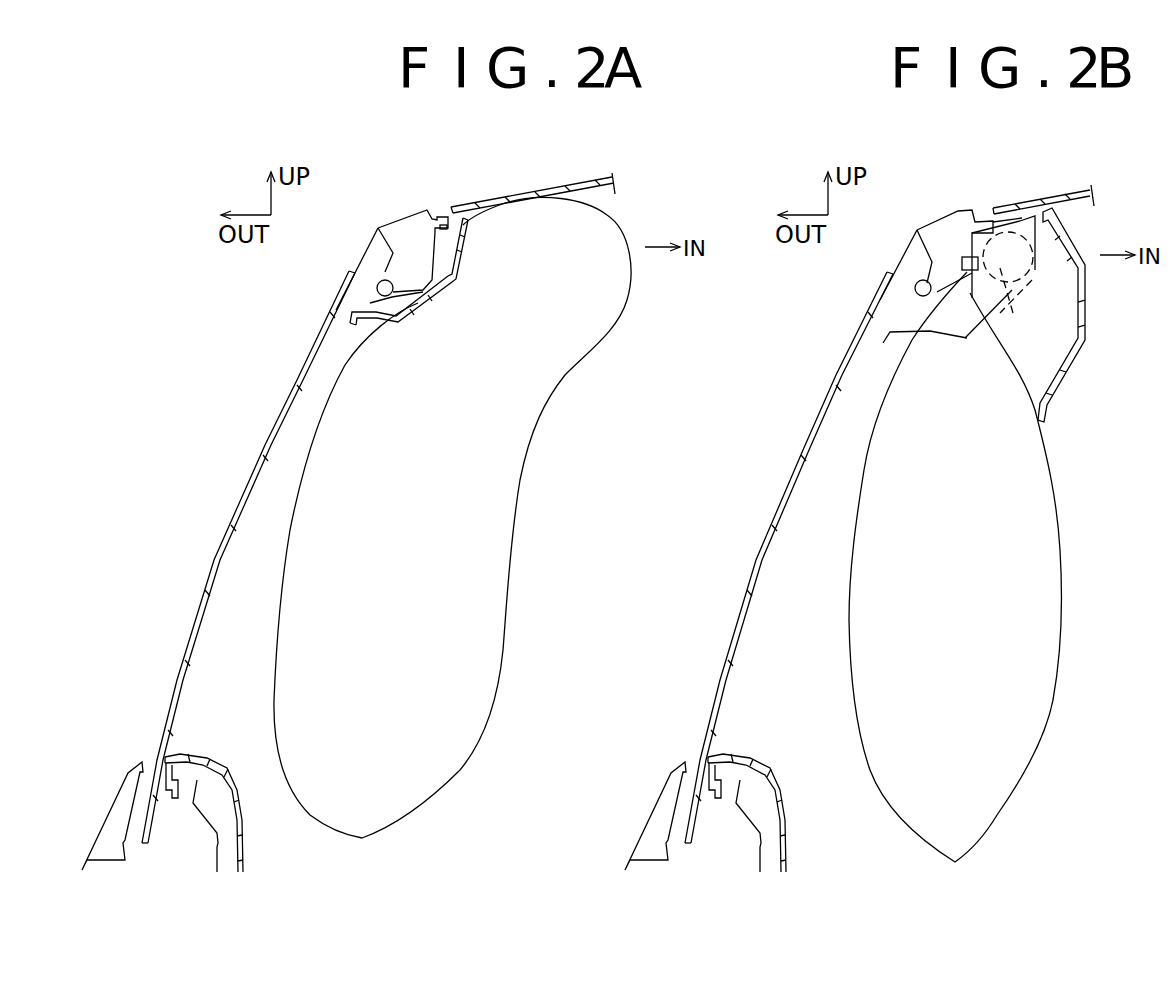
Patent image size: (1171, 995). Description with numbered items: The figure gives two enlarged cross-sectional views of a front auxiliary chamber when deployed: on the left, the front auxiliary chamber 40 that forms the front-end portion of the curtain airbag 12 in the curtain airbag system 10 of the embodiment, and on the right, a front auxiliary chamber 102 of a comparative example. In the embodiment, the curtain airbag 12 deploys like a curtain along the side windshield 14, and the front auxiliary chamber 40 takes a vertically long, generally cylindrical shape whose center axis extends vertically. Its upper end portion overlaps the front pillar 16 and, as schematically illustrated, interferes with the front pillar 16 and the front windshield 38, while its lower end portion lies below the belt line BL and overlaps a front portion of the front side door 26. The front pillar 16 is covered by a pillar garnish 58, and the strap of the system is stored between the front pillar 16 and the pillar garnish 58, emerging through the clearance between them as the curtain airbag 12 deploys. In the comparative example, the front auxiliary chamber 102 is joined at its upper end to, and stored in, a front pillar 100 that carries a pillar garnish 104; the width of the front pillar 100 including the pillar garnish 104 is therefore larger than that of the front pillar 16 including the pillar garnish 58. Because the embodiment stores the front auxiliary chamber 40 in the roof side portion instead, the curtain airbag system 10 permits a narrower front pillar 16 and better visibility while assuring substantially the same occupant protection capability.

In FIG. 2A, the curtain airbag system 10 is at (634, 352).
In FIG. 2A, the curtain airbag 12 is at (457, 517).
In FIG. 2A, the side windshield 14 is at (268, 443).
In FIG. 2B, the side windshield 14 is at (745, 622).
In FIG. 2A, the front pillar 16 is at (410, 207).
In FIG. 2A, the front side door 26 is at (247, 845).
In FIG. 2B, the front side door 26 is at (787, 823).
In FIG. 2A, the front windshield 38 is at (593, 182).
In FIG. 2A, the front auxiliary chamber 40 is at (480, 657).
In FIG. 2A, the pillar garnish 58 is at (418, 303).
In FIG. 2B, the front pillar 100 is at (957, 207).
In FIG. 2B, the front auxiliary chamber 102 is at (1005, 282).
In FIG. 2B, the pillar garnish 104 is at (937, 335).
In FIG. 2A, the belt line BL is at (193, 753).
In FIG. 2B, the belt line BL is at (730, 760).